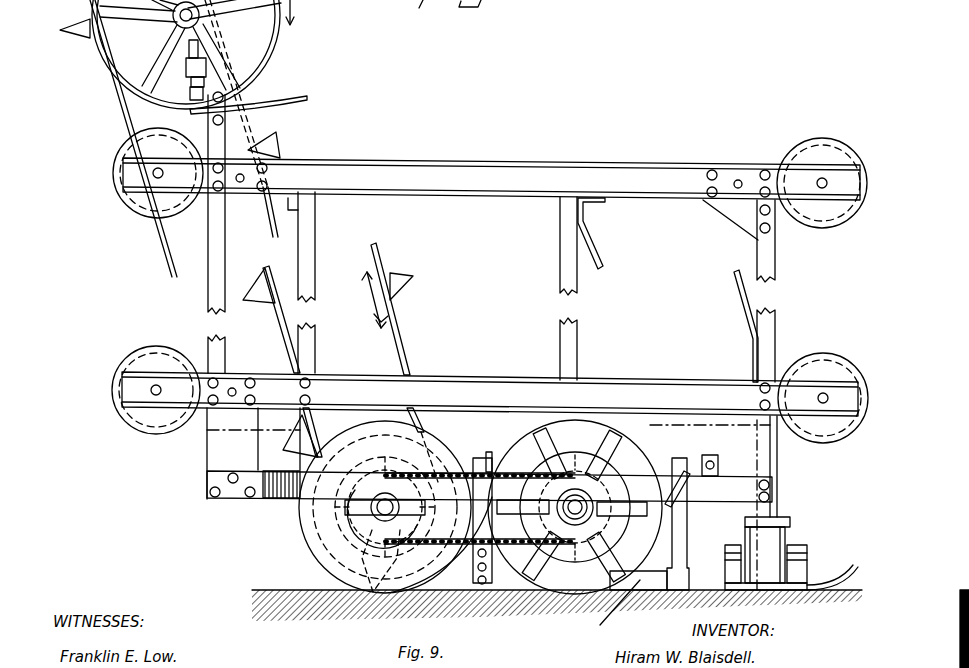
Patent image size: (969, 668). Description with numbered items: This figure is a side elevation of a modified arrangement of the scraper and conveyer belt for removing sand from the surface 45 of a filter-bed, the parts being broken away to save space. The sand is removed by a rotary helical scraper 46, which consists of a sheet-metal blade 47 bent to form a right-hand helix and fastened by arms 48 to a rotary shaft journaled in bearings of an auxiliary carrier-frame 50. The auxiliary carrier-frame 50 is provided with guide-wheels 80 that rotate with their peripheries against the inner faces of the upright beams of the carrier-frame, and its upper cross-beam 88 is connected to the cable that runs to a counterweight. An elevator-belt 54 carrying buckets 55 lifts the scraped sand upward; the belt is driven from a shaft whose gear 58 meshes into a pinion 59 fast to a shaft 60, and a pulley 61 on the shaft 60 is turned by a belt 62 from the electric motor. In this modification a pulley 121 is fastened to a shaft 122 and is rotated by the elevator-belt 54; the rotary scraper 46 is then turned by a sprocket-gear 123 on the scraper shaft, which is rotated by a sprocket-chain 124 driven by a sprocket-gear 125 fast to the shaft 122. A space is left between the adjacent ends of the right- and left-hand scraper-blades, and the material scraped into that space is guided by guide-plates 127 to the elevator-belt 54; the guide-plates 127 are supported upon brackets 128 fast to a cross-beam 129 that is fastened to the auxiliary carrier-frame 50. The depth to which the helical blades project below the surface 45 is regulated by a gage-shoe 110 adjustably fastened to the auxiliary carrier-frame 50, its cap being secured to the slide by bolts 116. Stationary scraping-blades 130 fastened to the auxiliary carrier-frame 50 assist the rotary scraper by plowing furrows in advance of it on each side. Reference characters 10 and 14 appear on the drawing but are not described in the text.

The frame rail 10 is at (490, 481).
The axle 14 is at (562, 510).
The surface of the filter-bed 45 is at (312, 592).
The rotary helical scraper 46 is at (575, 507).
The sheet-metal blade 47 is at (640, 531).
The arms 48 is at (620, 458).
The auxiliary carrier-frame 50 is at (227, 245).
The elevator-belt 54 is at (125, 105).
The buckets 55 is at (385, 272).
The gear 58 is at (65, 19).
The pinion 59 is at (160, 30).
The shaft 60 is at (205, 22).
The pulley 61 is at (277, 42).
The belt 62 is at (307, 99).
The guide-wheels 80 is at (128, 213).
The upper cross-beam 88 is at (500, 164).
The gage-shoe 110 is at (810, 540).
The bolts 116 is at (775, 482).
The pulley 121 is at (382, 460).
The shaft 122 is at (378, 508).
The sprocket-gear 123 is at (545, 528).
The sprocket-chain 124 is at (400, 556).
The sprocket-gear 125 is at (462, 480).
The guide-plates 127 is at (402, 596).
The brackets 128 is at (480, 500).
The cross-beam 129 is at (490, 455).
The stationary scraping-blades 130 is at (619, 607).